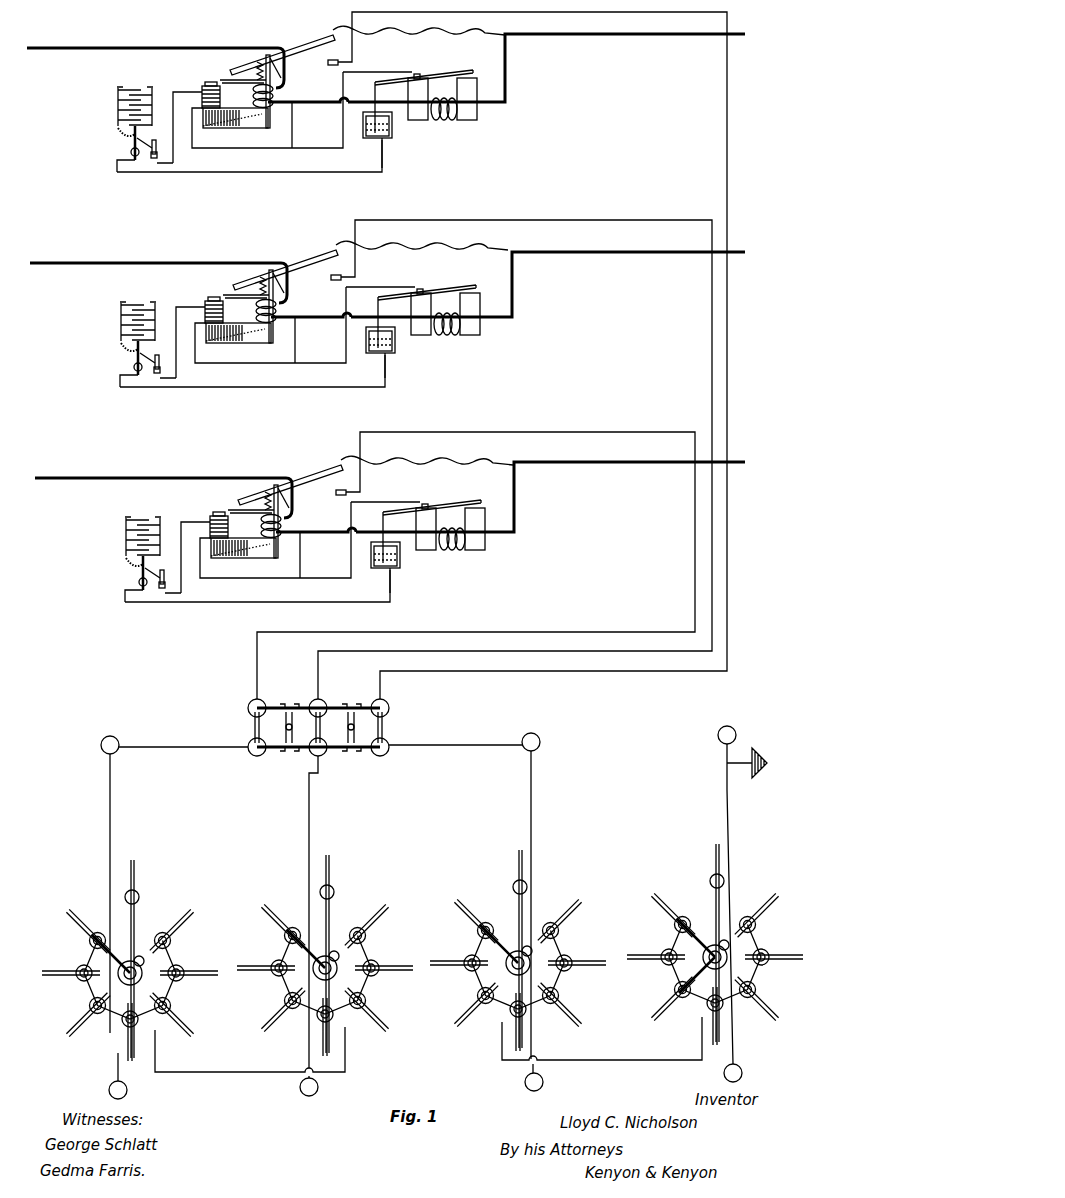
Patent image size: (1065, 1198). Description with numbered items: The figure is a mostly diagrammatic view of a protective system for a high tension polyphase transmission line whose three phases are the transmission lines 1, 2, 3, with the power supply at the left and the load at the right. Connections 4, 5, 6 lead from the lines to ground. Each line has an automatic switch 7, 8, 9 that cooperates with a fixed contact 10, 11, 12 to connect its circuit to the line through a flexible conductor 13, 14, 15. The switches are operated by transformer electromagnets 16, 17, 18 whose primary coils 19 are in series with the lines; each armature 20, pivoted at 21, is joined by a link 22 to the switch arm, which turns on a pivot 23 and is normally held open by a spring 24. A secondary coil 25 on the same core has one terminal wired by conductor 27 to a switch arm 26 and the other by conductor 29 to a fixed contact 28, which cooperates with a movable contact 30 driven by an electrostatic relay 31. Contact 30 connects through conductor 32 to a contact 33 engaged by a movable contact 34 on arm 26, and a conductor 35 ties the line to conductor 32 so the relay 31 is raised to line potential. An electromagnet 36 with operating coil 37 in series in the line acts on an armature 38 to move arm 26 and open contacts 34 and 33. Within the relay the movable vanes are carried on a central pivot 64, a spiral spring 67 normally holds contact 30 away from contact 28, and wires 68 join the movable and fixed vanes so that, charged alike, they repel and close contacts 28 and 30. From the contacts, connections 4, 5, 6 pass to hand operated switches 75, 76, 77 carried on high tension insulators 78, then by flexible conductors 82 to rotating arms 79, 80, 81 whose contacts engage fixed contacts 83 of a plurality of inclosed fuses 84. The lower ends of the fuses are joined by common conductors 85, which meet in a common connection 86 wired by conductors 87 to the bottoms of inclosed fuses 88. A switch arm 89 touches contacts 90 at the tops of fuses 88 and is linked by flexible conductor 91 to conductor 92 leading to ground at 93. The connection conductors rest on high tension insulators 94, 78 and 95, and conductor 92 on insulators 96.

The transmission line 1 is at (100, 47).
The transmission line 2 is at (103, 262).
The transmission line 3 is at (104, 477).
The connection 4 is at (640, 34).
The connection 5 is at (618, 220).
The connection 6 is at (610, 432).
The automatic switch 7 is at (318, 41).
The automatic switch 8 is at (318, 253).
The automatic switch 9 is at (320, 474).
The fixed contact 10 is at (331, 66).
The fixed contact 11 is at (334, 281).
The fixed contact 12 is at (348, 490).
The flexible conductor 13 is at (440, 36).
The flexible conductor 14 is at (459, 243).
The flexible conductor 15 is at (464, 458).
The transformer electromagnet 16 is at (247, 122).
The transformer electromagnet 17 is at (253, 337).
The transformer electromagnet 18 is at (258, 552).
The primary coil 19 is at (272, 88).
The armature 20 is at (228, 80).
The pivot 21 is at (206, 84).
The link 22 is at (273, 55).
The pivot 23 is at (266, 58).
The spring 24 is at (248, 508).
The secondary coil 25 is at (202, 93).
The switch arm 26 is at (385, 82).
The conductor 27 is at (322, 148).
The fixed contact 28 is at (160, 137).
The conductor 29 is at (175, 163).
The movable switch contact 30 is at (152, 160).
The electrostatic relay 31 is at (117, 98).
The conductor 32 is at (255, 172).
The contact 33 is at (384, 142).
The movable switch contact 34 is at (377, 105).
The conductor 35 is at (293, 135).
The electromagnet 36 is at (478, 113).
The operating coil 37 is at (448, 122).
The armature 38 is at (440, 71).
The central pivot 64 is at (133, 146).
The spiral spring 67 is at (131, 154).
The wire 68 is at (118, 130).
The hand operated switch 75 is at (254, 726).
The hand operated switch 76 is at (322, 712).
The hand operated switch 77 is at (384, 726).
The high tension insulator 78 is at (250, 704).
The rotating arm 79 is at (136, 913).
The rotating arm 80 is at (331, 928).
The rotating arm 81 is at (518, 918).
The flexible conductor 82 is at (134, 979).
The fixed contact 83 is at (100, 945).
The inclosed fuse 84 is at (80, 916).
The common conductor 85 is at (180, 943).
The common connection 86 is at (250, 1072).
The conductor 87 is at (665, 983).
The inclosed fuse 88 is at (667, 905).
The switch arm 89 is at (709, 927).
The electrical contact 90 is at (705, 951).
The flexible conductor 91 is at (715, 965).
The conductor 92 is at (730, 860).
The ground 93 is at (752, 770).
The high tension insulator 94 is at (104, 740).
The high tension insulator 95 is at (127, 1091).
The high tension insulator 96 is at (730, 731).